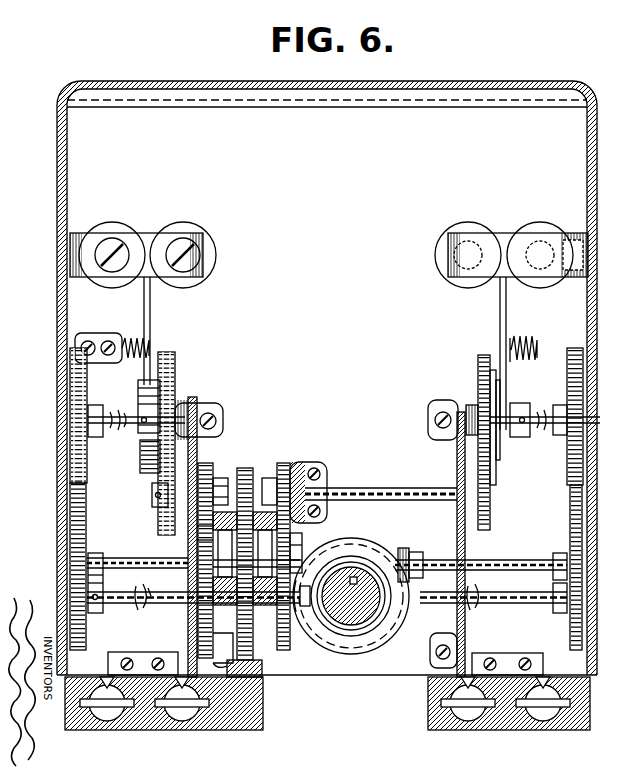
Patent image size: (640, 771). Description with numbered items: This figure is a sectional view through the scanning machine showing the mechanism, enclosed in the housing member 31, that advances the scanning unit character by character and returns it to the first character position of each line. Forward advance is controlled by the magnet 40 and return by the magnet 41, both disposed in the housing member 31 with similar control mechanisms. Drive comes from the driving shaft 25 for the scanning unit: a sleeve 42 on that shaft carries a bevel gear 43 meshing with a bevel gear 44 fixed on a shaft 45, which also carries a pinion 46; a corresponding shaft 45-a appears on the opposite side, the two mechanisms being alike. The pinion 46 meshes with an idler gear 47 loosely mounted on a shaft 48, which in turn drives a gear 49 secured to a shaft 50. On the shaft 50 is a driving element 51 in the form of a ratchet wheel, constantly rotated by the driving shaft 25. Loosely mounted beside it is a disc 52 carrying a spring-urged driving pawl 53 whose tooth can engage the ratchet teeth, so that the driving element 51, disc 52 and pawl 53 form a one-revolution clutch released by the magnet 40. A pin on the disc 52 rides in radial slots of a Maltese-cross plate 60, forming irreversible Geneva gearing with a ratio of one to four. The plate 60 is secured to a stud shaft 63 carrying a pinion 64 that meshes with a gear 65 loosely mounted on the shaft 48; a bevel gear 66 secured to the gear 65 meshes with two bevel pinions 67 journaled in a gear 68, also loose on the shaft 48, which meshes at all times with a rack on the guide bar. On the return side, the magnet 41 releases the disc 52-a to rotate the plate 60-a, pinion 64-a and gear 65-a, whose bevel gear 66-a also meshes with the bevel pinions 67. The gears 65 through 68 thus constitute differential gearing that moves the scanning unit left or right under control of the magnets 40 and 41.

The driving shaft 25 is at (350, 620).
The housing member 31 is at (571, 91).
The magnet 40 is at (181, 232).
The magnet 41 is at (480, 233).
The sleeve 42 is at (378, 578).
The bevel gear 43 is at (362, 549).
The bevel gear 44 is at (292, 627).
The shaft 45 is at (126, 600).
The shaft 45-a is at (510, 600).
The pinion 46 is at (70, 578).
The idler gear 47 is at (70, 513).
The shaft 48 is at (113, 562).
The gear 49 is at (70, 372).
The shaft 50 is at (117, 434).
The driving element 51 is at (150, 400).
The disc 52 is at (164, 358).
The disc 52-a is at (478, 356).
The driving pawl 53 is at (151, 470).
The plate 60 is at (166, 529).
The plate 60-a is at (481, 529).
The stud shaft 63 is at (234, 475).
The pinion 64 is at (206, 469).
The pinion 64-a is at (280, 461).
The gear 65 is at (205, 534).
The gear 65-a is at (335, 500).
The bevel gear 66 is at (185, 596).
The bevel gear 66-a is at (300, 545).
The bevel pinions 67 is at (258, 480).
The gear 68 is at (258, 640).